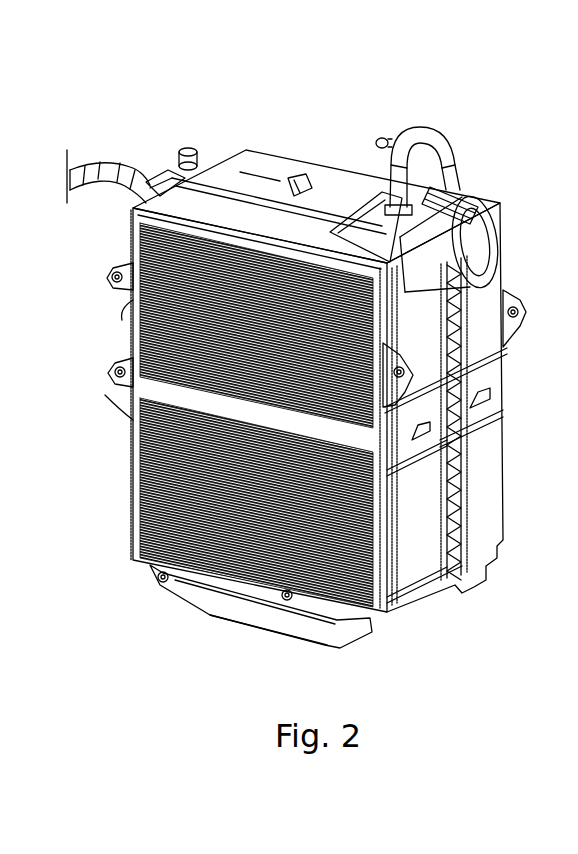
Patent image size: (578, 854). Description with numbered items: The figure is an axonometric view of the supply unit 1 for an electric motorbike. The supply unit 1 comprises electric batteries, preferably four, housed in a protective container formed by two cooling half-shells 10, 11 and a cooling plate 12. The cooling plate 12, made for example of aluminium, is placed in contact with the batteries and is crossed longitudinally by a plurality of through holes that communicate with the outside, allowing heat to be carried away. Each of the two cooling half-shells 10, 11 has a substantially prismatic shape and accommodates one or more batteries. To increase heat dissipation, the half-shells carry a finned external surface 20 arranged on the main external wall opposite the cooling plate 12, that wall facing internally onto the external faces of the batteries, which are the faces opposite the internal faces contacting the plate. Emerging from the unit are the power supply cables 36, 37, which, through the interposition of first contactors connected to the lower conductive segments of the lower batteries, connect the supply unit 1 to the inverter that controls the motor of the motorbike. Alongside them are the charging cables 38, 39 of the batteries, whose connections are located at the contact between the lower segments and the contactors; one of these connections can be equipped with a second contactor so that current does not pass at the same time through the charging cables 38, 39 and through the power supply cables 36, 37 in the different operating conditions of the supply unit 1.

The supply unit 1 is at (118, 646).
The cooling half-shell 10 is at (150, 190).
The cooling half-shell 11 is at (310, 167).
The cooling plate 12 is at (262, 158).
The finned external surface 20 is at (131, 337).
The power supply cable 36 is at (112, 162).
The power supply cable 37 is at (98, 177).
The charging cable 38 is at (437, 167).
The charging cable 39 is at (390, 137).